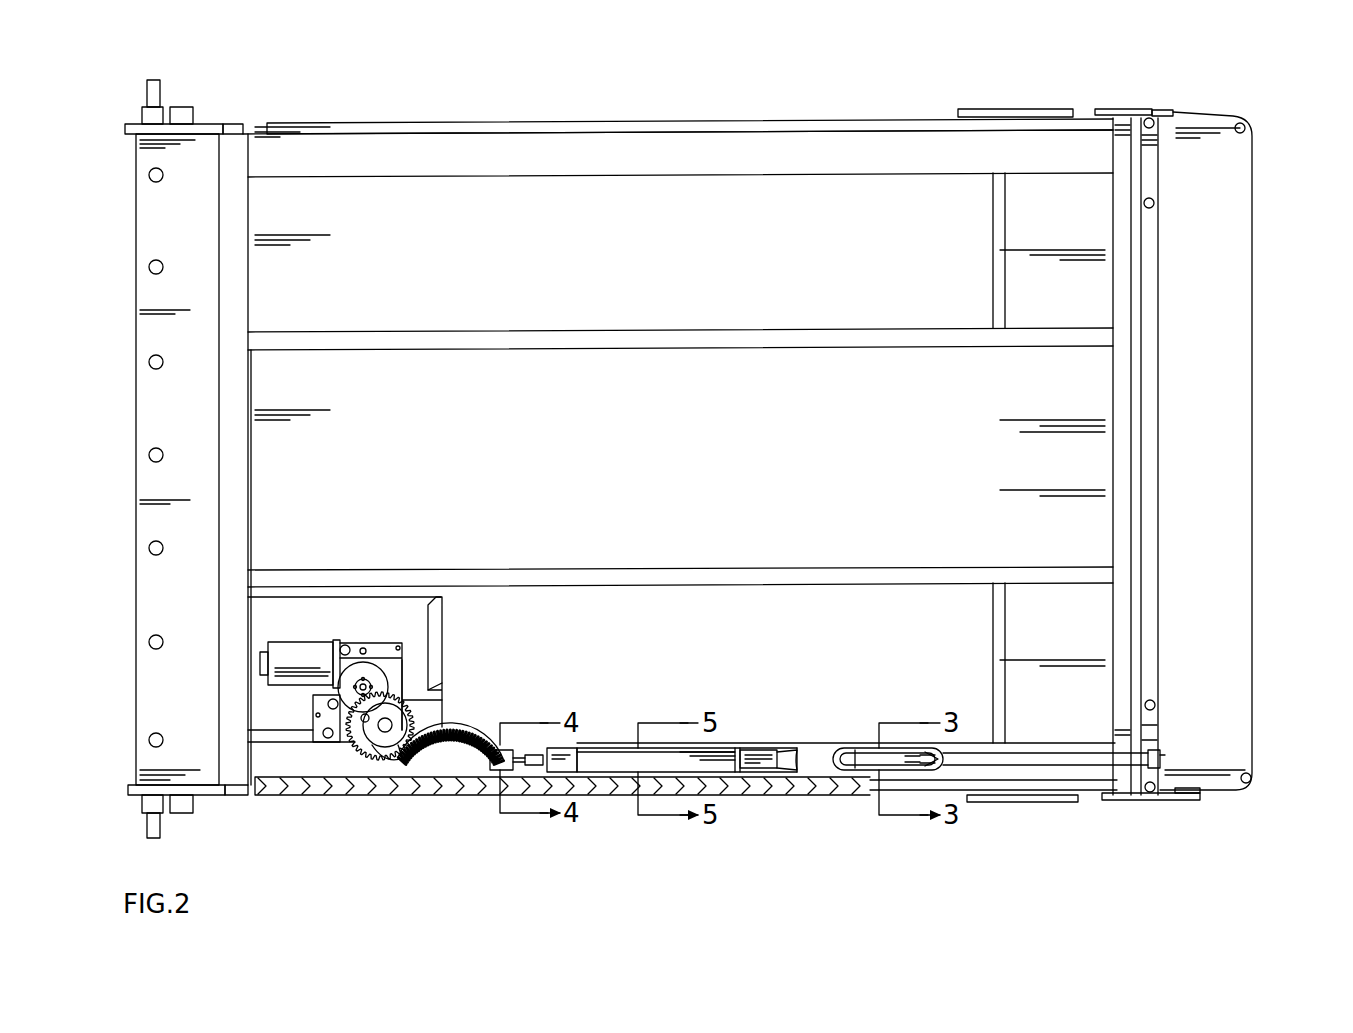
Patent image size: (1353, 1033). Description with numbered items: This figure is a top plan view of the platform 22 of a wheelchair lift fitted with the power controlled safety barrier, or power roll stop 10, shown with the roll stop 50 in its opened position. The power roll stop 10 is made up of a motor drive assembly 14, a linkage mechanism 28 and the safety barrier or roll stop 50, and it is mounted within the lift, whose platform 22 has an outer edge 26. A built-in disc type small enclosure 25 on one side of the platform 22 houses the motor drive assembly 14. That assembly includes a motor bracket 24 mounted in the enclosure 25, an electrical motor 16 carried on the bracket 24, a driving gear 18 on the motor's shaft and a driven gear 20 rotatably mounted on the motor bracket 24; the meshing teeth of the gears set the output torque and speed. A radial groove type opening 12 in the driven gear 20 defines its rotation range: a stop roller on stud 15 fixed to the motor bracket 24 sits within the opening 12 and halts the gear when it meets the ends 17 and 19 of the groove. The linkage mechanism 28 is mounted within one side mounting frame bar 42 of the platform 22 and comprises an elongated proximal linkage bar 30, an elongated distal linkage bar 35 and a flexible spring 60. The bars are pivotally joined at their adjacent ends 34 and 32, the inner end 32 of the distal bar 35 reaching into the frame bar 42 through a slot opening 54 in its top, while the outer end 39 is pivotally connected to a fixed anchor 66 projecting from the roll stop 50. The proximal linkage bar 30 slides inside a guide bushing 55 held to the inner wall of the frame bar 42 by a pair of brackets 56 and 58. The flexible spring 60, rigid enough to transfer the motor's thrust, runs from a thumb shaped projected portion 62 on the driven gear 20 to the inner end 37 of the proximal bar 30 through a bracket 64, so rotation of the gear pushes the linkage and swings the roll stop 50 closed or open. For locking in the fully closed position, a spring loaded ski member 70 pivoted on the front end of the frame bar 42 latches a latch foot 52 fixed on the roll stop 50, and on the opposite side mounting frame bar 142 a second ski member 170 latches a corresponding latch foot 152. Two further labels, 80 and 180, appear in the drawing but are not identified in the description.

The power roll stop 10 is at (736, 598).
The radial groove type opening 12 is at (375, 757).
The motor drive assembly 14 is at (310, 612).
The stop roller on stud 15 is at (353, 722).
The electrical motor 16 is at (292, 650).
The end of groove opening 17 is at (432, 695).
The driving gear 18 is at (403, 675).
The end of groove opening 19 is at (396, 748).
The driven gear 20 is at (395, 724).
The platform 22 is at (600, 202).
The motor bracket 24 is at (392, 645).
The enclosure 25 is at (442, 606).
The outer edge 26 is at (1136, 412).
The linkage mechanism 28 is at (822, 690).
The proximal linkage bar 30 is at (872, 770).
The inner end of distal linkage bar 32 is at (932, 752).
The outer end of proximal linkage bar 34 is at (920, 768).
The distal linkage bar 35 is at (915, 768).
The inner end of proximal linkage bar 37 is at (565, 748).
The outer end of distal linkage bar 39 is at (1150, 770).
The side mounting frame bar 42 is at (820, 745).
The roll stop 50 is at (1240, 475).
The latch foot 52 is at (1190, 802).
The slot opening 54 is at (855, 748).
The guide bushing 55 is at (618, 752).
The bracket 56 is at (612, 748).
The bracket 58 is at (740, 778).
The flexible spring 60 is at (500, 750).
The thumb shaped projected portion 62 is at (410, 760).
The ⊐ shaped bracket 64 is at (536, 768).
The fixed anchor 66 is at (1162, 755).
The ski member 70 is at (1045, 803).
The tube end 80 is at (820, 780).
The side mounting frame bar 142 is at (745, 176).
The latch foot 152 is at (1150, 110).
The ski member 170 is at (985, 109).
The top rail 180 is at (700, 124).